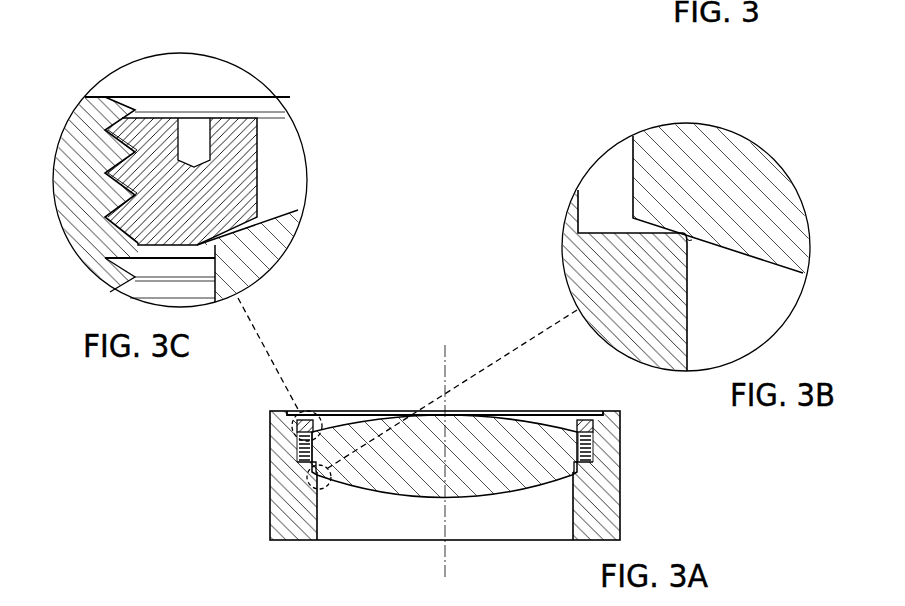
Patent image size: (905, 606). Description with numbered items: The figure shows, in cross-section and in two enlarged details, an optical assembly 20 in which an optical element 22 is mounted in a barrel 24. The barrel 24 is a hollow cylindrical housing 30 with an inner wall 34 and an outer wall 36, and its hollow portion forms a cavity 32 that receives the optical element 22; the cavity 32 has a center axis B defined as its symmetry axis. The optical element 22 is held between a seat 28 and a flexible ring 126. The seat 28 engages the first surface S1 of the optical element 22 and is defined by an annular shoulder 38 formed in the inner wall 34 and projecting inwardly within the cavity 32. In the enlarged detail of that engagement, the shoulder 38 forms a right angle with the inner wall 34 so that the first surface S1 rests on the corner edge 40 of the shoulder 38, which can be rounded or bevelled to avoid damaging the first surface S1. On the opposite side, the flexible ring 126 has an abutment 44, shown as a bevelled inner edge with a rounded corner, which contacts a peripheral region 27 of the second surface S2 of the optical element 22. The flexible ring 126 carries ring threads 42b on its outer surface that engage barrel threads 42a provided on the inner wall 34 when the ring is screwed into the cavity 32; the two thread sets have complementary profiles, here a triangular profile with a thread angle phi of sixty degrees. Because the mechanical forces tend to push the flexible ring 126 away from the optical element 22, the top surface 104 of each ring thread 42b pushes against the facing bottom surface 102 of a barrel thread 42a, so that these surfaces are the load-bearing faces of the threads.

In FIG. 3A, the optical assembly 20 is at (213, 444).
In FIG. 3A, the optical element 22 is at (495, 426).
In FIG. 3B, the optical element 22 is at (730, 153).
In FIG. 3C, the optical element 22 is at (285, 238).
In FIG. 3A, the barrel 24 is at (292, 548).
In FIG. 3C, the peripheral region 27 is at (236, 248).
In FIG. 3A, the seat 28 is at (336, 488).
In FIG. 3B, the seat 28 is at (714, 305).
In FIG. 3A, the hollow cylindrical housing 30 is at (612, 522).
In FIG. 3A, the cavity 32 is at (547, 530).
In FIG. 3A, the inner wall 34 is at (318, 513).
In FIG. 3B, the inner wall 34 is at (592, 203).
In FIG. 3A, the outer wall 36 is at (285, 428).
In FIG. 3B, the annular shoulder 38 is at (633, 258).
In FIG. 3B, the corner edge 40 is at (690, 242).
In FIG. 3C, the barrel threads 42a is at (118, 152).
In FIG. 3C, the ring threads 42b is at (127, 187).
In FIG. 3C, the abutment 44 is at (242, 218).
In FIG. 3C, the bottom surface 102 is at (128, 208).
In FIG. 3C, the top surface 104 is at (125, 234).
In FIG. 3A, the flexible ring 126 is at (583, 422).
In FIG. 3C, the flexible ring 126 is at (232, 140).
In FIG. 3A, the center axis B is at (445, 362).
In FIG. 3A, the first surface S1 is at (480, 500).
In FIG. 3B, the first surface S1 is at (777, 268).
In FIG. 3A, the second surface S2 is at (550, 416).
In FIG. 3C, the second surface S2 is at (296, 206).
In FIG. 3C, the thread angle phi is at (123, 128).